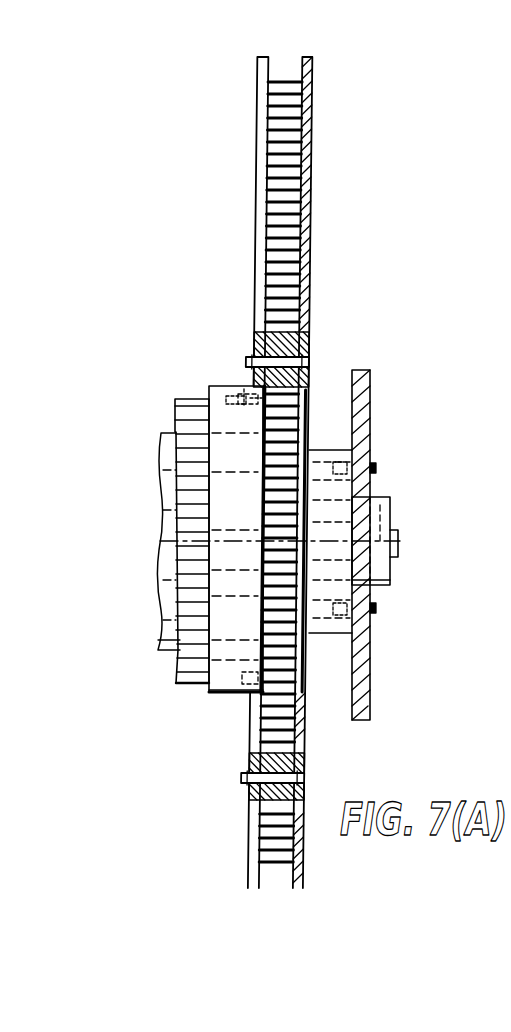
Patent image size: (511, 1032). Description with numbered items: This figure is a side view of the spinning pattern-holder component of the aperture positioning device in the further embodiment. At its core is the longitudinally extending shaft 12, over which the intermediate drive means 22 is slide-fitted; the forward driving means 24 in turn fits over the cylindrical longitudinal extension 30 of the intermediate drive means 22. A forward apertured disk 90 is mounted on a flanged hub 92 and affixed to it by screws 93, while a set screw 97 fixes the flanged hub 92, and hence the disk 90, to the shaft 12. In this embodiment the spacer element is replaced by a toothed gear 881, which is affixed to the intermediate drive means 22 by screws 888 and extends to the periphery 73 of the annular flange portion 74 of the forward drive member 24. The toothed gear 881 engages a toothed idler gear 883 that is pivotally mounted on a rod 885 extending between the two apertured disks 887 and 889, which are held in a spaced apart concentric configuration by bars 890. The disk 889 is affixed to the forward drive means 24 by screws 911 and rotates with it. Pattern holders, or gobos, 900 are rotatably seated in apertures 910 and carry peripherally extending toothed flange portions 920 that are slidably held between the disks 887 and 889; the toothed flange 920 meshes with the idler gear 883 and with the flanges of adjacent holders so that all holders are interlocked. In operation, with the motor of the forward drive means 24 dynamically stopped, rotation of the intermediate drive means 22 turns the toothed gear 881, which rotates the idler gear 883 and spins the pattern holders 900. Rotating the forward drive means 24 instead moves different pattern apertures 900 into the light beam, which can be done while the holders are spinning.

The pattern holder 900 is at (321, 451).
The apertured disk 889 is at (258, 472).
The apertured disk 887 is at (349, 472).
The toothed flange portion 920 is at (280, 472).
The aperture 910 is at (315, 313).
The toothed idler gear 883 is at (353, 351).
The rod 885 is at (314, 362).
The bar 890 is at (316, 778).
The intermediate drive means 22 is at (215, 514).
The periphery 73 is at (240, 388).
The screw 911 is at (240, 385).
The forward driving means 24 is at (228, 694).
The screw 888 is at (180, 597).
The annular flange portion 74 is at (205, 701).
The cylindrical longitudinal extension 30 is at (158, 440).
The toothed gear 881 is at (306, 428).
The forward apertured disk 90 is at (370, 415).
The screw 93 is at (376, 468).
The set screw 97 is at (390, 497).
The longitudinally extending shaft 12 is at (398, 543).
The flanged hub 92 is at (390, 585).